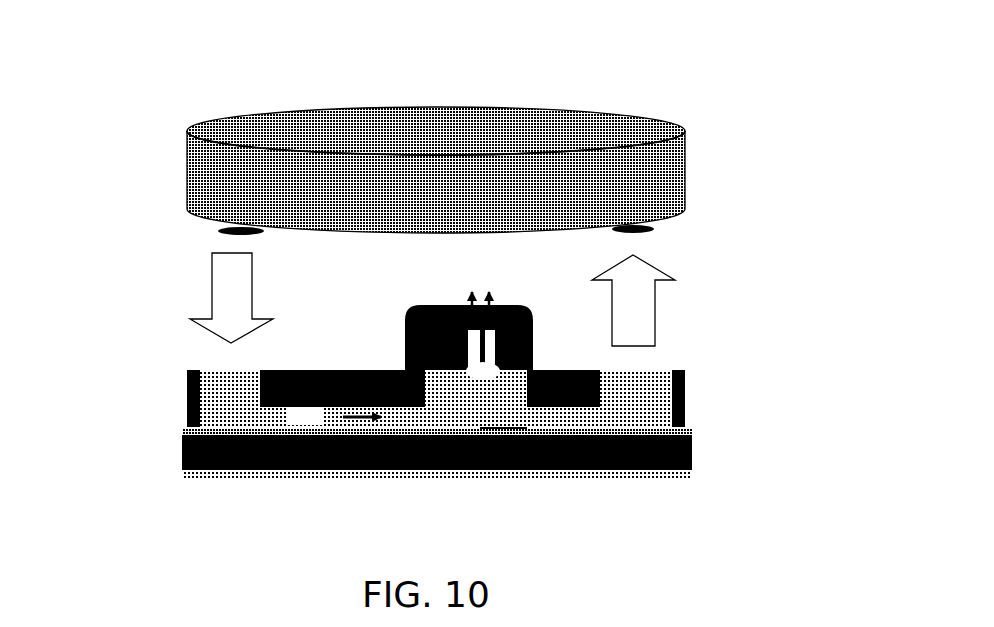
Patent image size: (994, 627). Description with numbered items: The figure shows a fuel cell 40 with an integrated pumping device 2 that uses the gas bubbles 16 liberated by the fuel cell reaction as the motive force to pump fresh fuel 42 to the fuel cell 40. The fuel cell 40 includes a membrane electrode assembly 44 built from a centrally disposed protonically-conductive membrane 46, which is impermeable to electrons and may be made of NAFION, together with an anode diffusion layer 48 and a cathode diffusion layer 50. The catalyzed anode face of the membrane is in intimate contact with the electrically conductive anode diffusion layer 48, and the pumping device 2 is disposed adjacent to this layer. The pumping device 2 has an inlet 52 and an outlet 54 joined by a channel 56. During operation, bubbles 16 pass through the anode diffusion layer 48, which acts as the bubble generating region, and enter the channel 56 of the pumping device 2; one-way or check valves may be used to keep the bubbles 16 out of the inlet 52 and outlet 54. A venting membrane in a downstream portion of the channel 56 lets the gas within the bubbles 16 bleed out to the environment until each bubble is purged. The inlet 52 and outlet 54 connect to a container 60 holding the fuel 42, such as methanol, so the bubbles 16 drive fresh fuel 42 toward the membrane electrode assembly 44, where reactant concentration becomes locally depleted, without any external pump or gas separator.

The pumping device 2 is at (433, 429).
The gas bubbles 16 is at (306, 429).
The fuel cell 40 is at (703, 117).
The fresh fuel 42 is at (211, 288).
The membrane electrode assembly 44 is at (404, 482).
The protonically-conductive membrane 46 is at (176, 450).
The anode diffusion layer 48 is at (176, 430).
The cathode diffusion layer 50 is at (176, 471).
The inlet 52 is at (230, 352).
The outlet 54 is at (639, 371).
The channel 56 is at (544, 420).
The container 60 is at (231, 114).